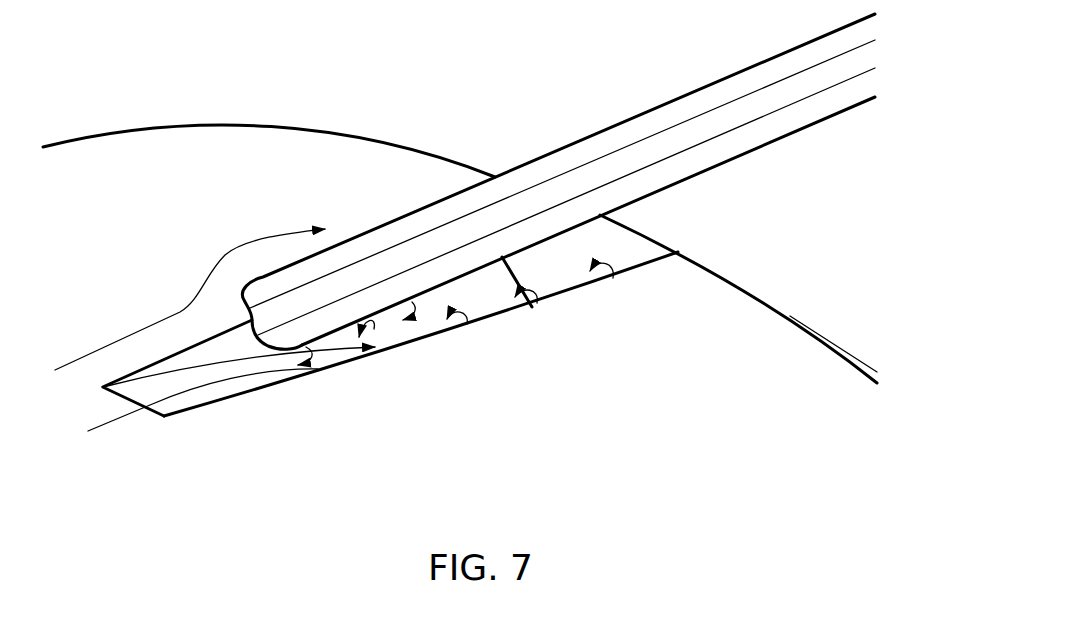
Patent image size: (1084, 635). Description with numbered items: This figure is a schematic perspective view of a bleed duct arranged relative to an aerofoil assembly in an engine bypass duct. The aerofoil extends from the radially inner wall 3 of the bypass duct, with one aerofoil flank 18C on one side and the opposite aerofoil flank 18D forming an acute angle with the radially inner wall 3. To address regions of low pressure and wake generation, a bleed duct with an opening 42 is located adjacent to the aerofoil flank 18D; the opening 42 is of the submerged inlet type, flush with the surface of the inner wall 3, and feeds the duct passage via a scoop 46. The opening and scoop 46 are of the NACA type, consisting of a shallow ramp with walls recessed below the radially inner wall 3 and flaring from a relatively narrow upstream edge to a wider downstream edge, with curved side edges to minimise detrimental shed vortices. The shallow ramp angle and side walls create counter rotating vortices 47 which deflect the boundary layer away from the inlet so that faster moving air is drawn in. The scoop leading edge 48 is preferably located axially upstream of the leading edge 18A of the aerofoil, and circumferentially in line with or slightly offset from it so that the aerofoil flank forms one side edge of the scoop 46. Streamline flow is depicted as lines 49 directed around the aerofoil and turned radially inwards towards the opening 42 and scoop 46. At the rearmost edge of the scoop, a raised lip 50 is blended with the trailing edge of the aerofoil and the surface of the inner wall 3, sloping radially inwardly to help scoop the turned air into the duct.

The radially inner wall 3 is at (702, 382).
The leading edge 18A is at (305, 305).
The aerofoil flank 18C is at (673, 101).
The aerofoil flank 18D is at (740, 156).
The bleed duct opening 42 is at (393, 338).
The scoop 46 is at (557, 273).
The counter rotating vortices 47 is at (210, 360).
The scoop leading edge 48 is at (152, 412).
The streamline flow lines 49 is at (93, 428).
The raised lip 50 is at (664, 247).